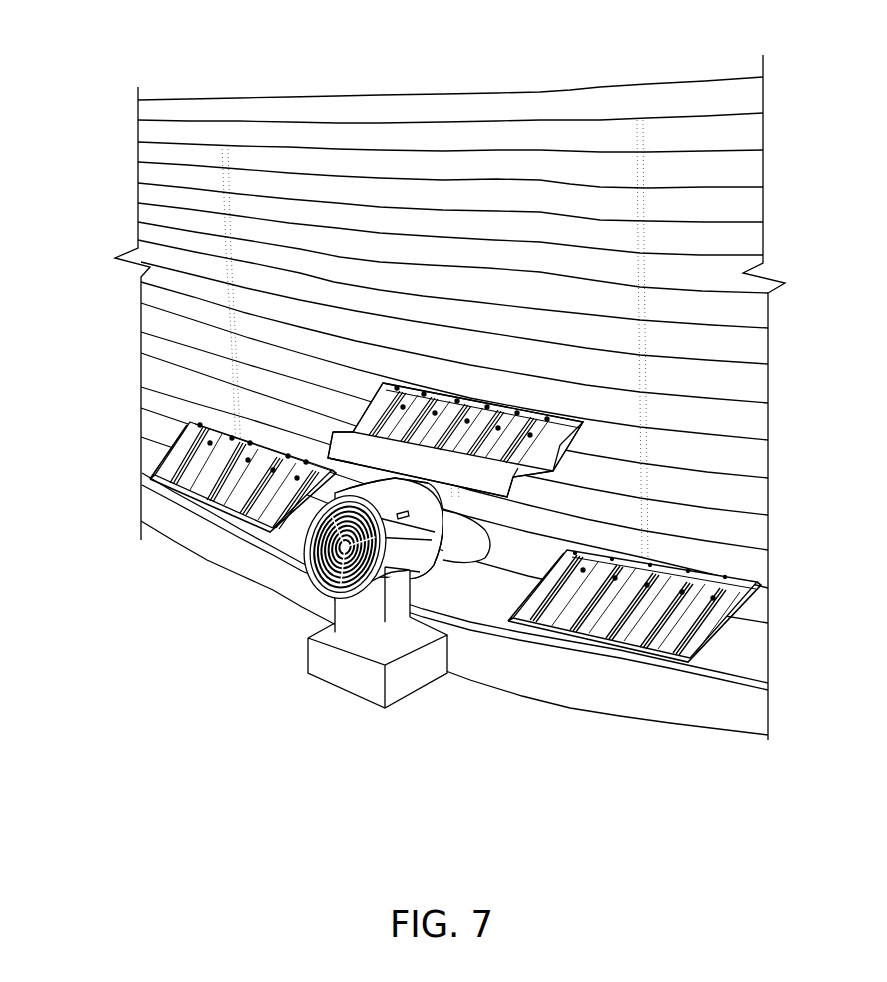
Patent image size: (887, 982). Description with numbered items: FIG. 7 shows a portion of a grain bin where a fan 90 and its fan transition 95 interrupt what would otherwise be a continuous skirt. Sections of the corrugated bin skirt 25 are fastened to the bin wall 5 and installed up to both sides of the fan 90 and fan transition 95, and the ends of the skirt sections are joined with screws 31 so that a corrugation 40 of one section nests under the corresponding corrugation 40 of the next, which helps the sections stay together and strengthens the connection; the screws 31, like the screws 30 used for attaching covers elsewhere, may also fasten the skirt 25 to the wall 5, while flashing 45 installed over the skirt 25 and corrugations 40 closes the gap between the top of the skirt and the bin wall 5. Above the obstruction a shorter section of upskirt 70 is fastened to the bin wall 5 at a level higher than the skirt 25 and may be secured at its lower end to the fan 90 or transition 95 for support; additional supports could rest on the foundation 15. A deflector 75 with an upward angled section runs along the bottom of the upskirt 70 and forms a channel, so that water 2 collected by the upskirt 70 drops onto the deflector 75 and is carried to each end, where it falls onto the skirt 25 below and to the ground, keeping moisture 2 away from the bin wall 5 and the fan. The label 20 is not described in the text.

The water 2 is at (230, 228).
The bin wall 5 is at (221, 145).
The foundation 15 is at (722, 745).
The deflector assembly 20 is at (179, 468).
The bin skirt 25 is at (153, 465).
The screws 30 is at (520, 258).
The screws 31 is at (435, 413).
The corrugations 40 is at (500, 428).
The flashing 45 is at (530, 435).
The upskirt 70 is at (770, 637).
The deflector 75 is at (352, 445).
The fan 90 is at (355, 582).
The fan transition 95 is at (425, 612).